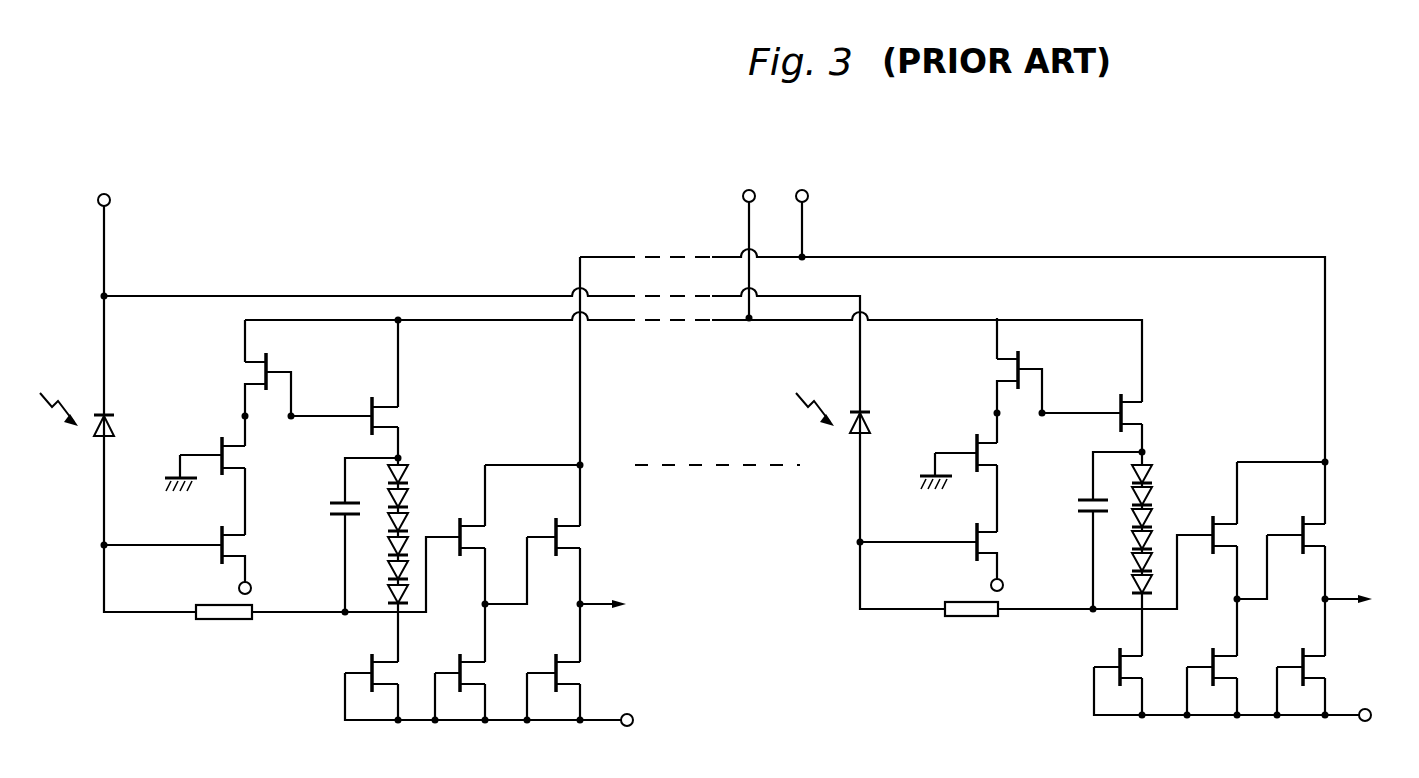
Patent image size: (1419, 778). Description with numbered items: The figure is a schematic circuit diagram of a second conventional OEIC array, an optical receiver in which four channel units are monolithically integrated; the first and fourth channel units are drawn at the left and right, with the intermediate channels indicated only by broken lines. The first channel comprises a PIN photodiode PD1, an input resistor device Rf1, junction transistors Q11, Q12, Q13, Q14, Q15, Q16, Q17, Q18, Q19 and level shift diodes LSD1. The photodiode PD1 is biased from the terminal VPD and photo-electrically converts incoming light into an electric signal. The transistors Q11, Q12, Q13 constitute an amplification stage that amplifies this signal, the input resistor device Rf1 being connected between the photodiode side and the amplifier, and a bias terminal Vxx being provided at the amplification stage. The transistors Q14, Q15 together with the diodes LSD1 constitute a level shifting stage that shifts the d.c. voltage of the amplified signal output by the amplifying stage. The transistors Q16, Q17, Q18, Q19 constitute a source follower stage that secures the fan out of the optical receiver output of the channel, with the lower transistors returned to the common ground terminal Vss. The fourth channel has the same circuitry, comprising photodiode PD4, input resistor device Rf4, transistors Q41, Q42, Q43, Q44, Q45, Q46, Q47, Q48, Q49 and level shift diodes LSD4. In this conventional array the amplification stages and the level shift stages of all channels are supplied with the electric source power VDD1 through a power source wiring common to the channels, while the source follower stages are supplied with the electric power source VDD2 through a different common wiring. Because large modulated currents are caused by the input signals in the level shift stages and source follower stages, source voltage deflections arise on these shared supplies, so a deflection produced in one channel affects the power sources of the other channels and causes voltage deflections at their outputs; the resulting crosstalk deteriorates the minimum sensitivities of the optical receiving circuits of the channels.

The photodiode bias supply terminal VPD is at (104, 188).
The electric source power VDD1 is at (750, 242).
The electric power source VDD2 is at (812, 211).
The bias voltage terminal Vxx is at (641, 587).
The ground supply terminal Vss is at (1015, 718).
The PIN photodiode PD1 is at (100, 412).
The photodiode of fourth channel PD4 is at (855, 409).
The input resistor device Rf1 is at (224, 626).
The feedback resistor of fourth channel Rf4 is at (971, 624).
The level shift diodes LSD1 is at (426, 533).
The level shift diode string of fourth channel LSD4 is at (1170, 528).
The junction transistor Q11 is at (276, 376).
The junction transistor Q12 is at (225, 464).
The junction transistor Q13 is at (254, 554).
The junction transistor Q14 is at (406, 416).
The junction transistor Q15 is at (389, 673).
The junction transistor Q16 is at (475, 537).
The junction transistor Q17 is at (480, 673).
The junction transistor Q18 is at (573, 537).
The junction transistor Q19 is at (573, 673).
The transistor Q41 is at (1029, 373).
The transistor Q42 is at (979, 461).
The transistor Q43 is at (1007, 551).
The transistor Q44 is at (1151, 413).
The transistor Q45 is at (1137, 667).
The transistor Q46 is at (1207, 551).
The transistor Q47 is at (1230, 667).
The transistor Q48 is at (1315, 535).
The transistor Q49 is at (1320, 667).